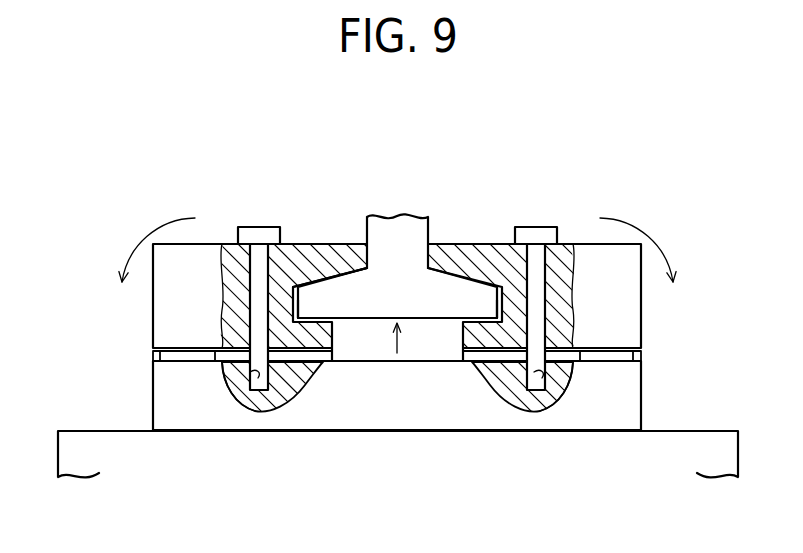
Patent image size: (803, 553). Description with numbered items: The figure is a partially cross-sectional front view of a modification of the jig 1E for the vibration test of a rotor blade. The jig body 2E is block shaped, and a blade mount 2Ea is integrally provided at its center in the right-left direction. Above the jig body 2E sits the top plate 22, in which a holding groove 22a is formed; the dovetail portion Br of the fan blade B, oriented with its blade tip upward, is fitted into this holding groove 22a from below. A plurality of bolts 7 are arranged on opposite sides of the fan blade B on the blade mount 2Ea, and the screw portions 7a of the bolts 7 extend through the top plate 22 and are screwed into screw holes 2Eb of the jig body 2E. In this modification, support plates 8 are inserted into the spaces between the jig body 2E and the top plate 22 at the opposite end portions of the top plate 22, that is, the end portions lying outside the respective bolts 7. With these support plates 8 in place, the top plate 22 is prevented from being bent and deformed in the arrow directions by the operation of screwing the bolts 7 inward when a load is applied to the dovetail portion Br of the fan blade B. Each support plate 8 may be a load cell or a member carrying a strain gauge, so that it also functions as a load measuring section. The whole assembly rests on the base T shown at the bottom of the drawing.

The jig for the vibration test of the rotor blade 1E is at (672, 180).
The top plate 22 is at (153, 297).
The holding groove 22a is at (326, 283).
The jig body 2E is at (643, 378).
The screw holes 2Eb is at (230, 387).
The blade mount 2Ea is at (362, 352).
The support plates 8 is at (160, 356).
The bolts 7 is at (253, 227).
The screw portions 7a is at (258, 395).
The fan blade B is at (395, 250).
The dovetail portion Br is at (423, 300).
The table T is at (409, 468).